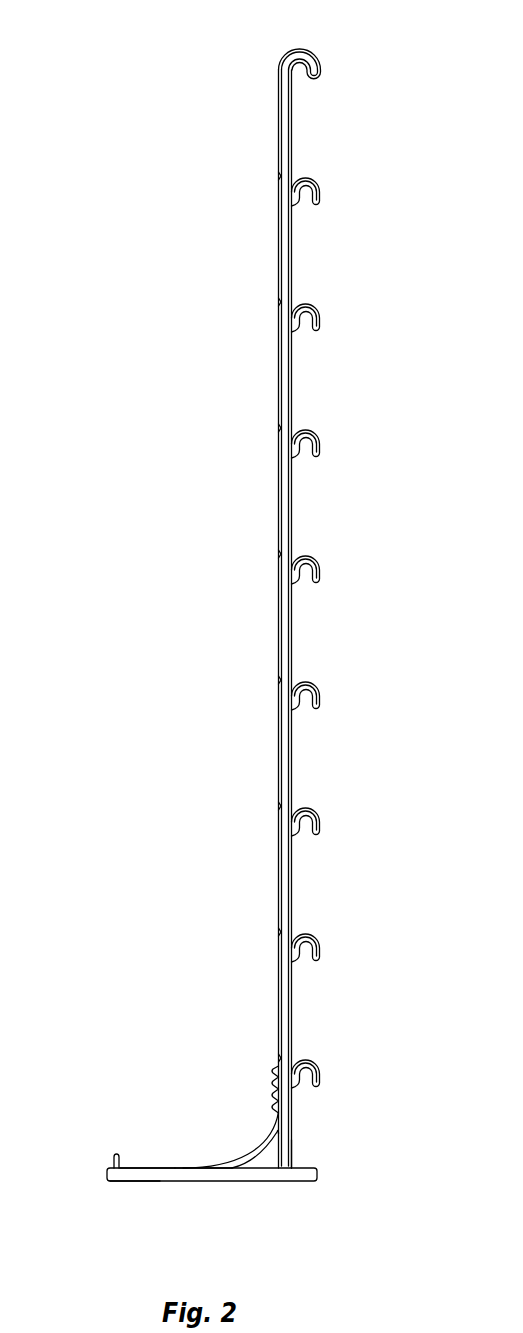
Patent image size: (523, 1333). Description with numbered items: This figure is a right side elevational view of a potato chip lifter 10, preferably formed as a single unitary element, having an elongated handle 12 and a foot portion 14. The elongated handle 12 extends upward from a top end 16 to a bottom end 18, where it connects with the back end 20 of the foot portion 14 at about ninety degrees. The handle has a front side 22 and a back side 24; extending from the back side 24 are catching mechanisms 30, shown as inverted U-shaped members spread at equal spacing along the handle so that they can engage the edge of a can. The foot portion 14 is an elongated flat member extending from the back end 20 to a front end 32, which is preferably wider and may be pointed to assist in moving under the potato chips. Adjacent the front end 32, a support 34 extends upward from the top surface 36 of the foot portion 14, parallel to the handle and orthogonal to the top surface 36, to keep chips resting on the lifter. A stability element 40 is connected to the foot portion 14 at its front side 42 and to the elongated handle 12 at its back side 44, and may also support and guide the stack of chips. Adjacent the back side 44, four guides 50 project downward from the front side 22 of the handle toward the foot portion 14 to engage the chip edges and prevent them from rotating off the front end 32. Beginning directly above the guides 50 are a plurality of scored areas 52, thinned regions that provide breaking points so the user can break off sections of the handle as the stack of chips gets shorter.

The potato chip lifter 10 is at (433, 97).
The elongated handle 12 is at (244, 381).
The foot portion 14 is at (220, 1182).
The top end 16 is at (300, 48).
The bottom end 18 is at (293, 1158).
The back end 20 is at (318, 1172).
The front side 22 is at (279, 630).
The back side 24 is at (292, 504).
The catching mechanisms 30 is at (318, 305).
The front end 32 is at (104, 1181).
The support 34 is at (110, 1159).
The top surface 36 is at (142, 1166).
The stability element 40 is at (245, 1148).
The front side 42 is at (190, 1166).
The back side 44 is at (272, 1115).
The guides 50 is at (273, 1087).
The scored areas 52 is at (279, 429).